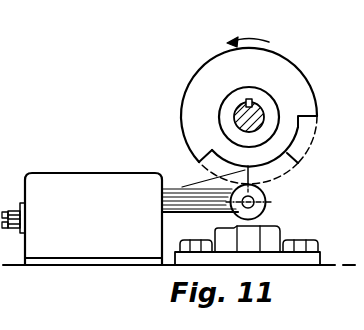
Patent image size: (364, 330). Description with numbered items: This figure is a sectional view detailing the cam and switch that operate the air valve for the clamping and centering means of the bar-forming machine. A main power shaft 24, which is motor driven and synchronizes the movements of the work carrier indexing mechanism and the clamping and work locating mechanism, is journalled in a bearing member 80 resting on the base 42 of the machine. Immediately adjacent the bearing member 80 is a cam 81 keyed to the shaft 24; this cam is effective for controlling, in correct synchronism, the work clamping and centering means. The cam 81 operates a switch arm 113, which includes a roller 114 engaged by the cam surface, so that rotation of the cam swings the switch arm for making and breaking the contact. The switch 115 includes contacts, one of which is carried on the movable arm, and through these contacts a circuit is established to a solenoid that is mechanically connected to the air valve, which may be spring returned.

The cam 81 is at (287, 76).
The main power shaft 24 is at (258, 112).
The switch 115 is at (80, 173).
The switch arm 113 is at (182, 186).
The roller 114 is at (266, 203).
The bearing member 80 is at (278, 233).
The base 42 is at (324, 266).